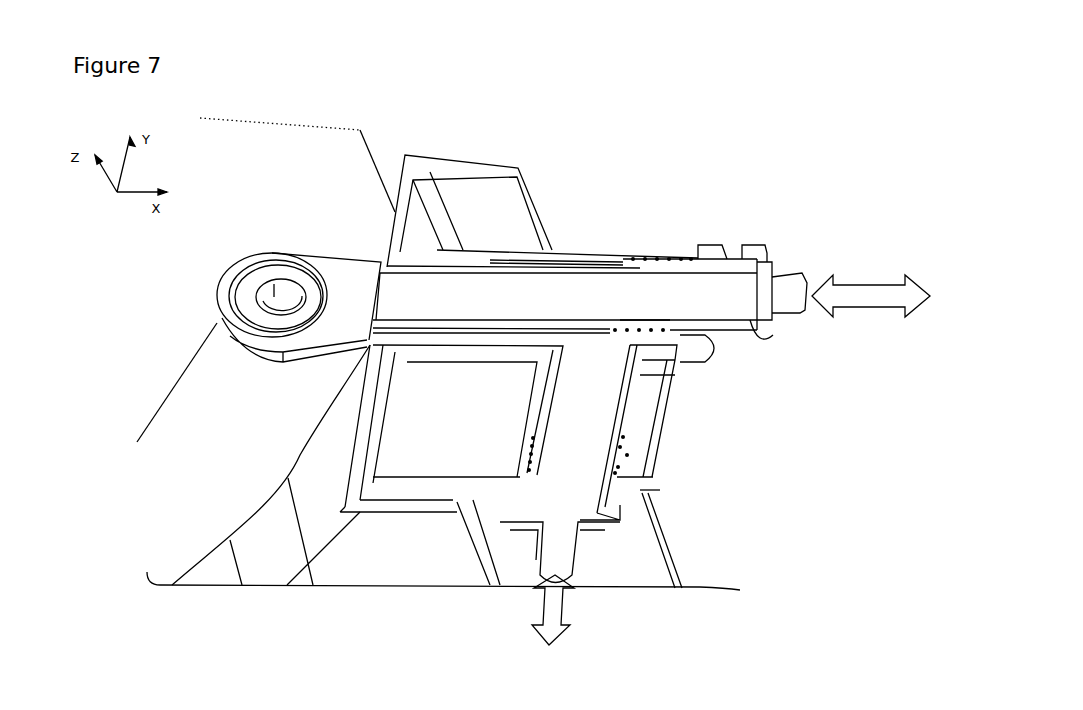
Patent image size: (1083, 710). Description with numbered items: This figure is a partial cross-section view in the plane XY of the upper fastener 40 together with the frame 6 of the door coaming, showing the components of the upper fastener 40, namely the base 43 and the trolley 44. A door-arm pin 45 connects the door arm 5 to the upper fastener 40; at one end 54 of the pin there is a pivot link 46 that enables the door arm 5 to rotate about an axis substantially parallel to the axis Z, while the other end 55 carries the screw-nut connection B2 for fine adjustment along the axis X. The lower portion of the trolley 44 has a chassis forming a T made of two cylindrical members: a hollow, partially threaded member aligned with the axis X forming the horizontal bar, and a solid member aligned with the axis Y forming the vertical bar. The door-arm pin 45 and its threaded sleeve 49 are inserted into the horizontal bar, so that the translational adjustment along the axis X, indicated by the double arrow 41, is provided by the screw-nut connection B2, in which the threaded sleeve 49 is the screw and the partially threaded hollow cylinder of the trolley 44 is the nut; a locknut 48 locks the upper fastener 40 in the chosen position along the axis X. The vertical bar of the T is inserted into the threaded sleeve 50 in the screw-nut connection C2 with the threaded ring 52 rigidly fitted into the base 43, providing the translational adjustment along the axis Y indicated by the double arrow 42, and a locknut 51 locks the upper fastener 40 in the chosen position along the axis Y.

The door arm 5 is at (416, 351).
The frame 6 is at (450, 190).
The upper fastener 40 is at (788, 407).
The double arrow 41 is at (872, 301).
The double arrow 42 is at (565, 616).
The base 43 is at (295, 548).
The trolley 44 is at (565, 490).
The door-arm pin 45 is at (473, 297).
The pivot link 46 is at (297, 288).
The locknut 48 is at (707, 247).
The threaded sleeve 49 is at (643, 318).
The threaded sleeve 50 is at (617, 472).
The locknut 51 is at (650, 493).
The threaded ring 52 is at (640, 382).
The end 54 is at (333, 236).
The other end 55 is at (790, 257).
The screw-nut connection B2 is at (640, 320).
The screw-nut connection C2 is at (623, 457).